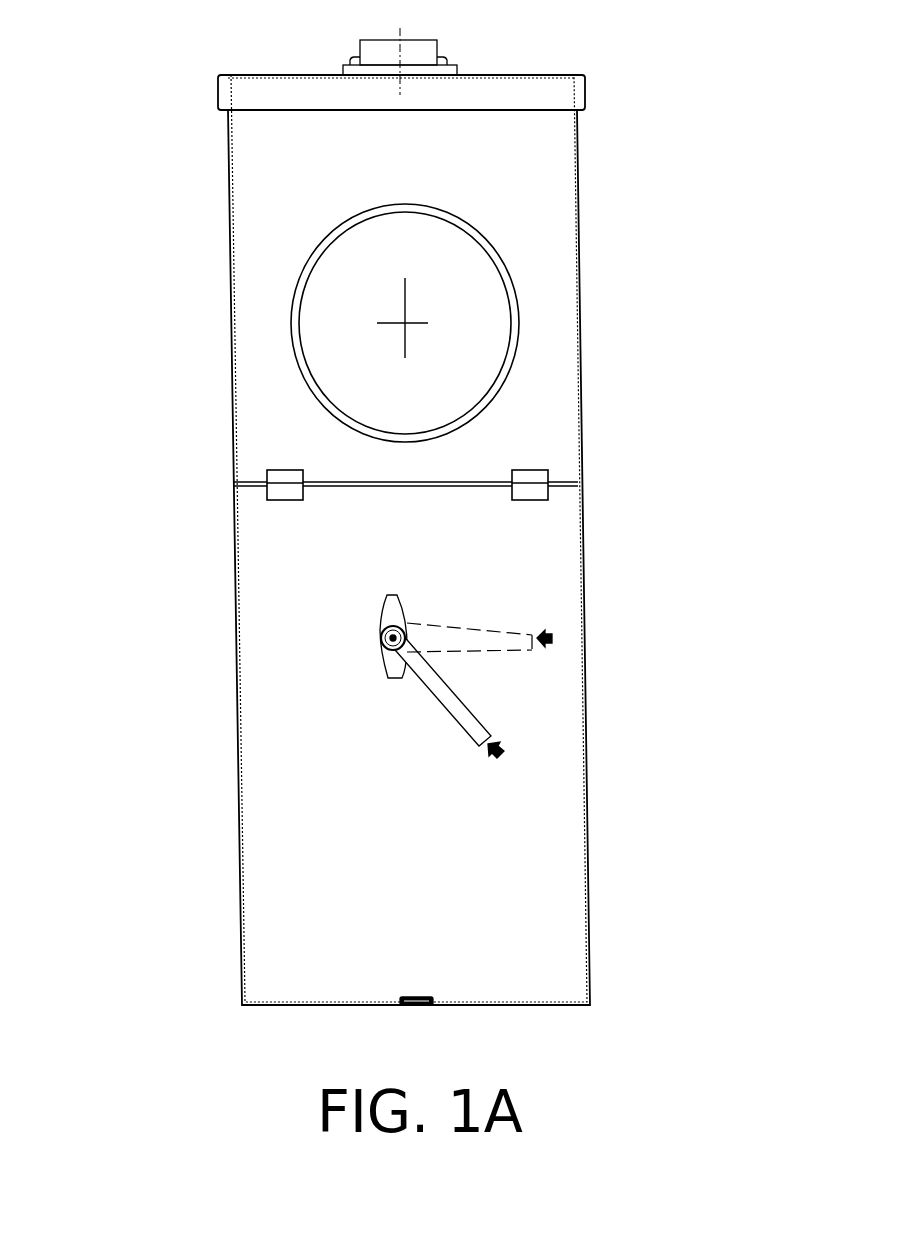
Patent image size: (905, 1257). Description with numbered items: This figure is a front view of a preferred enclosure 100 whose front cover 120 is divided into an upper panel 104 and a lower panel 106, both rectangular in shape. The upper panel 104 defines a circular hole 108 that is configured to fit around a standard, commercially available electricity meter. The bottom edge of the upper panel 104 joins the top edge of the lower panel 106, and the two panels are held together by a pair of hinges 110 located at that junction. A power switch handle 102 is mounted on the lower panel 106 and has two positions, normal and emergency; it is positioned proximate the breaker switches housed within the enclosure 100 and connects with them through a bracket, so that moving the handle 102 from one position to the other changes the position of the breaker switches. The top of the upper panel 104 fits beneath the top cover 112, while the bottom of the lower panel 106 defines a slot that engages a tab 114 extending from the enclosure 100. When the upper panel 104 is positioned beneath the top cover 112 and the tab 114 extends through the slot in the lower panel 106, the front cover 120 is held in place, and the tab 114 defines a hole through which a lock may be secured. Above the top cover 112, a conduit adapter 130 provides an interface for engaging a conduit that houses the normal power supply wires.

The enclosure 100 is at (585, 92).
The power switch handle 102 is at (485, 718).
The upper panel 104 is at (280, 182).
The lower panel 106 is at (330, 627).
The circular hole 108 is at (366, 303).
The hinges 110 is at (280, 472).
The top cover 112 is at (287, 75).
The tab 114 is at (430, 1005).
The front cover 120 is at (563, 275).
The conduit adapter 130 is at (437, 43).